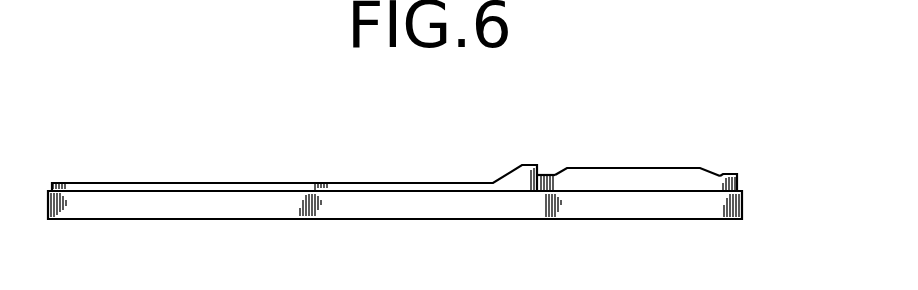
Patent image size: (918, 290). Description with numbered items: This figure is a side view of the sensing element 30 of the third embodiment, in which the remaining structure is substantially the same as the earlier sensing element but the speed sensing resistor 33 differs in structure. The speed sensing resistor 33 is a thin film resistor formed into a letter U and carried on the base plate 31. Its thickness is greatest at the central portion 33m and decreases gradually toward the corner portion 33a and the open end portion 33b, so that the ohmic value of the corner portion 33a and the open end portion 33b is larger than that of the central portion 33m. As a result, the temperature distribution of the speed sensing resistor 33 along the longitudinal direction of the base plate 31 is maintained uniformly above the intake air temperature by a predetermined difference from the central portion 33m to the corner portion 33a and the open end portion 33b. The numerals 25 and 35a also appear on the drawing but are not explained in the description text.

The partially visible numeral from adjacent figure 25 is at (697, 8).
The sensing element 30 is at (476, 152).
The base plate 31 is at (500, 210).
The speed sensing resistor 33 is at (659, 160).
The corner portion 33a is at (722, 175).
The open end portion 33b is at (555, 175).
The central portion 33m is at (628, 183).
The cover plate 35a is at (353, 183).